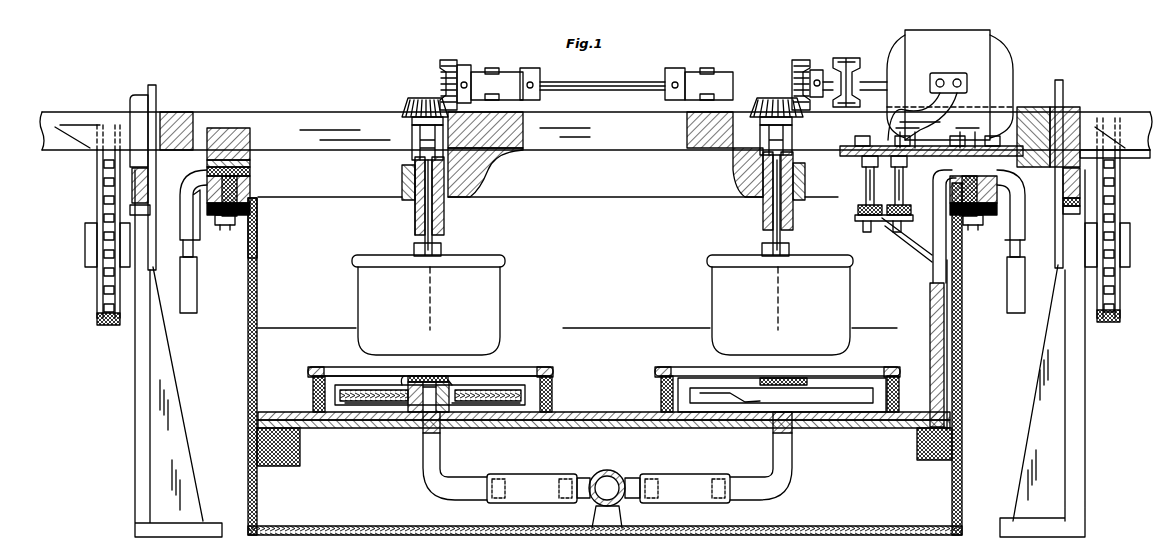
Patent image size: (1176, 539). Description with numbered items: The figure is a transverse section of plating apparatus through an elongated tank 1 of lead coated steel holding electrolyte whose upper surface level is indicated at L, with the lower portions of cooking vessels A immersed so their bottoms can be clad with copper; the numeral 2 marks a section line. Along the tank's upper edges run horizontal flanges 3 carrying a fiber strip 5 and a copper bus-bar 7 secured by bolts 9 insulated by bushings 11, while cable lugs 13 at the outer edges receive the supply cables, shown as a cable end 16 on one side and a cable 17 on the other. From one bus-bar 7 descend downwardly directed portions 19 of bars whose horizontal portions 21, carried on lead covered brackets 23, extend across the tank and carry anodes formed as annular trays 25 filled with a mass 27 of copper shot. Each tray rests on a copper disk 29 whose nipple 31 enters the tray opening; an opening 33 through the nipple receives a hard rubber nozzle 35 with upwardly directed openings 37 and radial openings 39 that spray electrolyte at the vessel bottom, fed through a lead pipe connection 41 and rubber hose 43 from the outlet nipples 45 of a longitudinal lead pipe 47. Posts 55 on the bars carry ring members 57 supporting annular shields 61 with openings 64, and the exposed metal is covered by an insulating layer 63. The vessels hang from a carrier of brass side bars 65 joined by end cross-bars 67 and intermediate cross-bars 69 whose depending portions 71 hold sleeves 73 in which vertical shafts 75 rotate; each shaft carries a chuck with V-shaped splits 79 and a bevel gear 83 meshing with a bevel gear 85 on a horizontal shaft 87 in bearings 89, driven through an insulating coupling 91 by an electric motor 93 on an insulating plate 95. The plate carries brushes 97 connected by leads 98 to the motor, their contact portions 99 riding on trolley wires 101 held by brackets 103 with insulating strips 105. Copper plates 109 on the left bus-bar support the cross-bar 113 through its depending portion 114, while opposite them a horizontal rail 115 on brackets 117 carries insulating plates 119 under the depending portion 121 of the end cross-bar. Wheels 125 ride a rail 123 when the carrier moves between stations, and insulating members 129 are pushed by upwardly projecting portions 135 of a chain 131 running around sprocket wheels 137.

The tank 1 is at (247, 350).
The section line 2 is at (372, 352).
The horizontal flanges 3 is at (212, 224).
The strip of insulating material 5 is at (250, 190).
The bus-bars 7 is at (960, 148).
The bolts 9 is at (230, 222).
The insulating bushings 11 is at (258, 226).
The cable lugs 13 is at (180, 200).
The pipe end 16 is at (197, 298).
The cable 17 is at (1007, 276).
The downwardly directed portions of bars 19 is at (933, 262).
The horizontal portions of bars 21 is at (366, 430).
The brackets 23 is at (293, 445).
The annular trays 25 is at (540, 398).
The mass of copper shot 27 is at (513, 388).
The disks 29 is at (470, 392).
The nipple 31 is at (447, 412).
The opening 33 is at (416, 412).
The nozzle 35 is at (440, 376).
The upwardly directed openings 37 is at (428, 378).
The radially directed openings 39 is at (405, 378).
The pipe connection 41 is at (436, 478).
The rubber hose 43 is at (530, 480).
The outlet nipples 45 is at (584, 478).
The lead pipe 47 is at (613, 468).
The posts 55 is at (313, 389).
The ring members 57 is at (552, 367).
The annular metal shields 61 is at (345, 367).
The insulating layer 63 is at (930, 342).
The shield openings 64 is at (455, 386).
The side bars 65 is at (368, 118).
The end cross-bars 67 is at (176, 112).
The intermediate cross-bars 69 is at (500, 148).
The depending portions 71 is at (402, 178).
The sleeves 73 is at (763, 210).
The vertical shafts 75 is at (433, 213).
The V-shaped splits 79 is at (415, 210).
The bevel gear 83 is at (424, 98).
The bevel gear 85 is at (447, 60).
The horizontal shaft 87 is at (640, 82).
The bearings 89 is at (512, 68).
The insulating coupling 91 is at (848, 58).
The electric motor 93 is at (975, 55).
The plate of insulating material 95 is at (840, 152).
The brushes 97 is at (862, 170).
The leads 98 is at (930, 78).
The contact portions 99 is at (866, 190).
The trolley wires 101 is at (858, 209).
The brackets 103 is at (912, 245).
The insulating strips 105 is at (858, 222).
The plates 109 is at (250, 170).
The cross-bar 113 is at (223, 128).
The depending portion 114 is at (207, 164).
The horizontal rail 115 is at (1080, 200).
The brackets 117 is at (135, 391).
The plates of insulating material 119 is at (1040, 107).
The depending portion 121 is at (1100, 153).
The rail 123 is at (132, 190).
The wheels 125 is at (157, 106).
The bar-like members 129 is at (78, 112).
The chain 131 is at (108, 325).
The upwardly projecting portions 135 is at (97, 160).
The sprocket wheels 137 is at (97, 208).
The cooking vessels A is at (500, 306).
The electrolyte surface level L is at (585, 333).